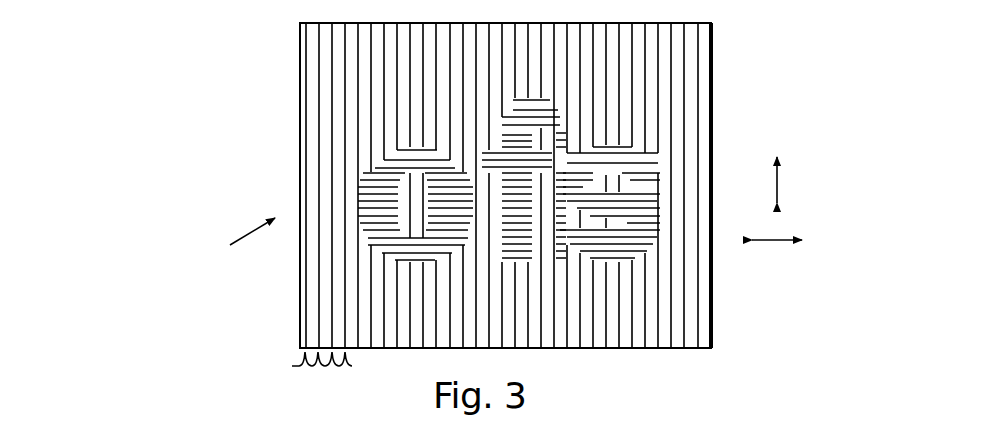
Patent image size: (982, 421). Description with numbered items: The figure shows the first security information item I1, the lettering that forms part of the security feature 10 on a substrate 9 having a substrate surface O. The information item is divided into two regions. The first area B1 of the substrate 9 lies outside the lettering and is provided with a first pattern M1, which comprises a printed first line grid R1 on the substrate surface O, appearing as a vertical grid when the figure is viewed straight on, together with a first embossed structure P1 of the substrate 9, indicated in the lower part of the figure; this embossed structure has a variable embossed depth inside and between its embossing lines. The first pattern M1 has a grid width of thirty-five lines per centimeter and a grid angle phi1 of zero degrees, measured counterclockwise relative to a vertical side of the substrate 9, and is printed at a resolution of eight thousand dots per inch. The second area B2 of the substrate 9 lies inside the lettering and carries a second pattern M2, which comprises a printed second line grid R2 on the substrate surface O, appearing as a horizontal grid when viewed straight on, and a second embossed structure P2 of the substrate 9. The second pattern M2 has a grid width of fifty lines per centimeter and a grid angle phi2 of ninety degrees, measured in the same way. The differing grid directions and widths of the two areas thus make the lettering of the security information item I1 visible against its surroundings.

The substrate 9 is at (427, 179).
The substrate surface O is at (681, 79).
The security feature 10 is at (712, 133).
The first area B1 is at (191, 185).
The first pattern M1 is at (191, 185).
The first line grid R1 is at (345, 110).
The first embossed structure P1 is at (300, 367).
The second area B2 is at (251, 180).
The second pattern M2 is at (251, 180).
The second line grid R2 is at (251, 180).
The second embossed structure P2 is at (380, 173).
The first security information item I1 is at (241, 234).
The grid angle of the first pattern phi1 is at (819, 180).
The grid angle of the second pattern phi2 is at (809, 239).